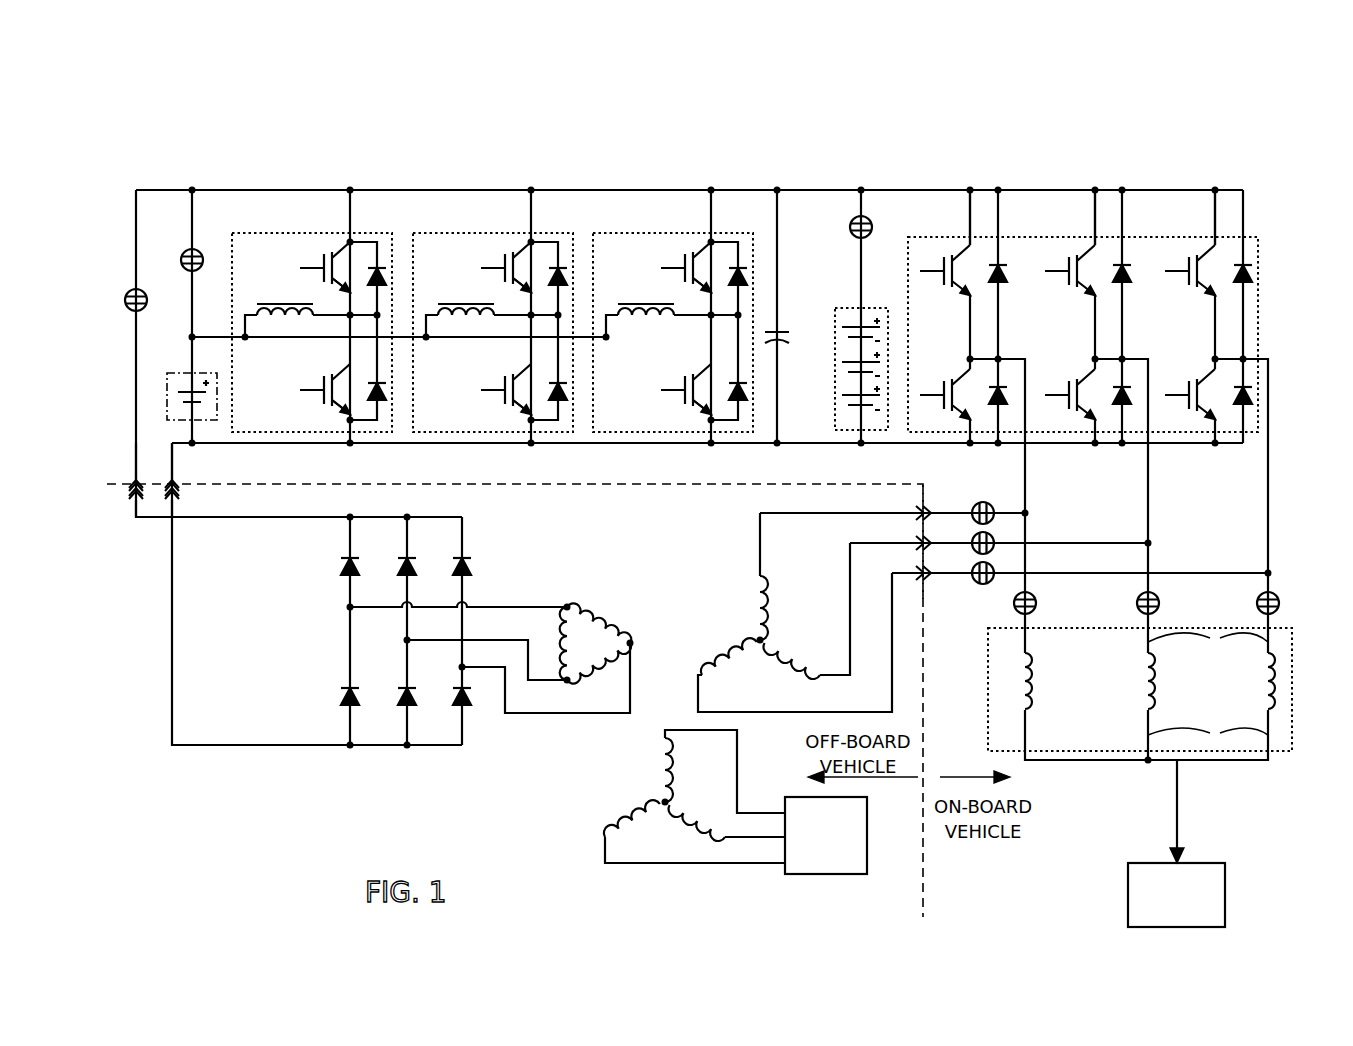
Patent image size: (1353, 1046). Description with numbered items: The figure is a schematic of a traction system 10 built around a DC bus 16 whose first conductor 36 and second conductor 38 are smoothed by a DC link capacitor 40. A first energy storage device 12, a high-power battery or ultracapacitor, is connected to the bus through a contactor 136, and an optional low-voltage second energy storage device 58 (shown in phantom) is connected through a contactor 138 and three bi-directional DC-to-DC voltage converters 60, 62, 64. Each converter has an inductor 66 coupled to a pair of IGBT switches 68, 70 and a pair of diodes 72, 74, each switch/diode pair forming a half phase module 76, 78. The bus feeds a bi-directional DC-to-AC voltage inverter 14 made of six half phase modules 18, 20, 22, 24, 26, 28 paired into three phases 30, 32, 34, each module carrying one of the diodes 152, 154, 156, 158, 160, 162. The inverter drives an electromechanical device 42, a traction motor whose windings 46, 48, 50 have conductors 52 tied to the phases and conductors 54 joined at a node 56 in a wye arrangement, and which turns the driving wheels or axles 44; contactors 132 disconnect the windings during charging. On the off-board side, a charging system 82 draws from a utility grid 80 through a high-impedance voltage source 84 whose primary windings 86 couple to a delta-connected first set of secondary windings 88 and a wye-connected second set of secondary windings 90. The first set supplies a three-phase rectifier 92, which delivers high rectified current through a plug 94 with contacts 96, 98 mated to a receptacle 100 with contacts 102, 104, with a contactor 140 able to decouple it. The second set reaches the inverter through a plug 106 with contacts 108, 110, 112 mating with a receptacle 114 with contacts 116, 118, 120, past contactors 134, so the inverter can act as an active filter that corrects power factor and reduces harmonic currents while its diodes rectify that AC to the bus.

The traction system 10 is at (186, 117).
The first energy storage device 12 is at (834, 310).
The bi-directional DC-to-AC voltage inverter 14 is at (906, 238).
The DC bus 16 is at (915, 188).
The half phase module 18 is at (944, 292).
The half phase module 20 is at (942, 423).
The half phase module 22 is at (1065, 292).
The half phase module 24 is at (1062, 423).
The half phase module 26 is at (1180, 292).
The half phase module 28 is at (1182, 423).
The phase 30 is at (966, 230).
The phase 32 is at (1089, 230).
The phase 34 is at (1209, 230).
The first conductor 36 is at (1228, 188).
The second conductor 38 is at (1212, 446).
The DC link capacitor 40 is at (786, 338).
The electromechanical device 42 is at (988, 656).
The driving wheels or axles 44 is at (1214, 862).
The winding 46 is at (1036, 684).
The winding 48 is at (1159, 684).
The winding 50 is at (1266, 664).
The conductors 52 is at (1032, 638).
The conductors 54 is at (1032, 730).
The node 56 is at (1052, 762).
The second energy storage device 58 is at (198, 416).
The bi-directional DC-to-DC voltage converter 60 is at (293, 232).
The bi-directional DC-to-DC voltage converter 62 is at (474, 232).
The bi-directional DC-to-DC voltage converter 64 is at (654, 232).
The inductor 66 is at (312, 318).
The switch 68 is at (302, 265).
The switch 70 is at (302, 392).
The diode 72 is at (382, 268).
The diode 74 is at (372, 380).
The half phase module 76 is at (318, 286).
The half phase module 78 is at (318, 410).
The utility grid 80 is at (868, 818).
The charging system 82 is at (310, 810).
The high-impedance voltage source 84 is at (595, 758).
The primary windings 86 is at (678, 778).
The first set of secondary windings 88 is at (612, 615).
The second set of secondary windings 90 is at (770, 615).
The three-phase rectifier 92 is at (328, 645).
The plug 94 is at (124, 500).
The contact 96 is at (140, 490).
The contact 98 is at (176, 490).
The receptacle 100 is at (122, 458).
The contact 102 is at (138, 484).
The contact 104 is at (174, 484).
The plug 106 is at (905, 512).
The contact 108 is at (914, 538).
The contact 110 is at (914, 568).
The contact 112 is at (922, 578).
The receptacle 114 is at (930, 582).
The contact 116 is at (930, 510).
The contact 118 is at (930, 540).
The contact 120 is at (930, 570).
The switches or contactors 132 is at (1038, 598).
The switches or contactors 134 is at (992, 535).
The switch or contactor 136 is at (852, 226).
The switch or contactor 138 is at (181, 249).
The switch or contactor 140 is at (125, 300).
The diode 152 is at (1008, 276).
The diode 154 is at (1132, 276).
The diode 156 is at (1252, 276).
The diode 158 is at (1000, 402).
The diode 160 is at (1124, 402).
The diode 162 is at (1244, 402).